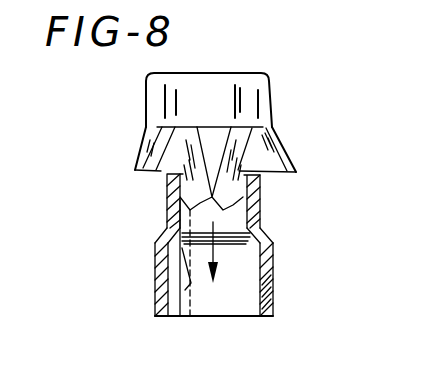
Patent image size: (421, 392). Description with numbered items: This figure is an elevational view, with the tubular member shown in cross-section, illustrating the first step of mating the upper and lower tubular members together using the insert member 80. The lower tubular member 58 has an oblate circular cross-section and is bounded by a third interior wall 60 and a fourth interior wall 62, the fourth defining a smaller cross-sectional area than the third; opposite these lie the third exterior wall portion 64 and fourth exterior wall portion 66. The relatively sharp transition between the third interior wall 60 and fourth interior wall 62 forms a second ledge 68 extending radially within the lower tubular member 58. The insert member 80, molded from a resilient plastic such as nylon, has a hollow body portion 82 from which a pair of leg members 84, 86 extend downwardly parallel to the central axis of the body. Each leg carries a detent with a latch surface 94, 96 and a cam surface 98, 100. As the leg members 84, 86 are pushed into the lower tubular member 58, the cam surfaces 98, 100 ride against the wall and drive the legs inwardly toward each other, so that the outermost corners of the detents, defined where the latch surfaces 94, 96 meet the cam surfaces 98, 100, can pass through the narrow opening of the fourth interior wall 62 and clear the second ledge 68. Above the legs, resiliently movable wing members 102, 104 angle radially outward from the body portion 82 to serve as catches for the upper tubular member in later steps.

The lower tubular member 58 is at (146, 305).
The third interior wall 60 is at (248, 298).
The fourth interior wall 62 is at (152, 262).
The third exterior wall portion 64 is at (274, 292).
The fourth exterior wall portion 66 is at (262, 216).
The second ledge 68 is at (192, 310).
The insert member 80 is at (216, 66).
The body portion 82 is at (272, 88).
The leg member 84 is at (168, 176).
The leg member 86 is at (256, 176).
The detent member latch surface 94 is at (176, 203).
The detent member latch surface 96 is at (250, 203).
The cam surface 98 is at (166, 229).
The cam surface 100 is at (274, 241).
The wing member 102 is at (138, 155).
The wing member 104 is at (259, 162).